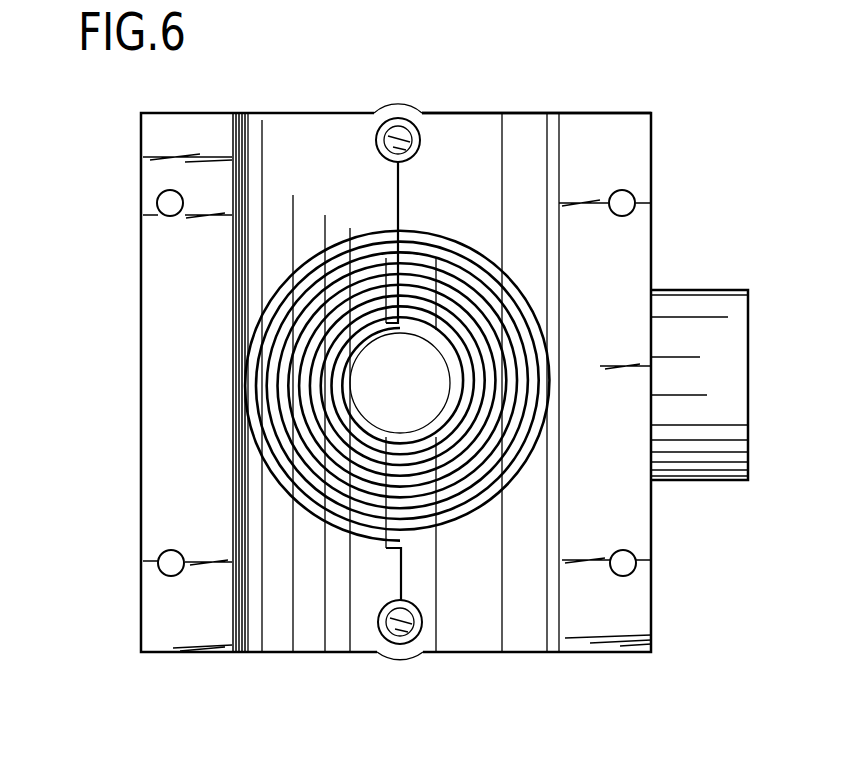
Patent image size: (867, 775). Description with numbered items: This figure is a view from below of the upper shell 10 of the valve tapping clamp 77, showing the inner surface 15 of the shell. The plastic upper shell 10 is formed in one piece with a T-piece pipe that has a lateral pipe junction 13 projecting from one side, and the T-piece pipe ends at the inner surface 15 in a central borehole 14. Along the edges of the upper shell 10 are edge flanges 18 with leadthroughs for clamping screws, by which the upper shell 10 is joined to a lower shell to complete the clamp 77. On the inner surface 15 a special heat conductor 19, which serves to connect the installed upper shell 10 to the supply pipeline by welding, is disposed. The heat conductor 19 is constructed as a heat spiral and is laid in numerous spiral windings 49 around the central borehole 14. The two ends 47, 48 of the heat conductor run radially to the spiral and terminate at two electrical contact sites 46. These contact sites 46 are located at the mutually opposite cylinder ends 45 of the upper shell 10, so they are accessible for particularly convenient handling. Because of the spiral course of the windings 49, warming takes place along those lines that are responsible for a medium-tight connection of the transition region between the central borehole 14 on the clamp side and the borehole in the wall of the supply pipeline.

The upper shell 10 is at (479, 104).
The lateral pipe junction 13 is at (717, 352).
The central borehole 14 is at (413, 397).
The inner surface 15 is at (521, 150).
The edge flanges 18 is at (190, 150).
The heat conductor 19 is at (467, 241).
The cylinder ends 45 is at (328, 112).
The electrical contact sites 46 is at (395, 124).
The end of heat conductor 47 is at (397, 190).
The end of heat conductor 48 is at (400, 573).
The spiral windings 49 is at (465, 518).
The valve tapping clamp 77 is at (612, 96).